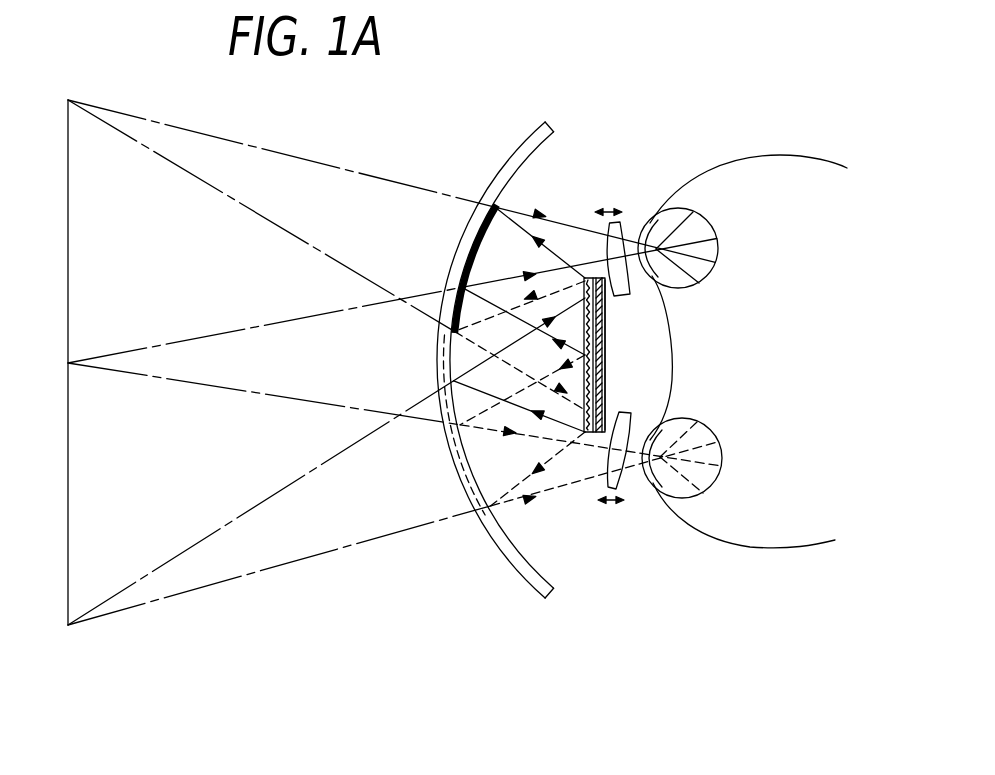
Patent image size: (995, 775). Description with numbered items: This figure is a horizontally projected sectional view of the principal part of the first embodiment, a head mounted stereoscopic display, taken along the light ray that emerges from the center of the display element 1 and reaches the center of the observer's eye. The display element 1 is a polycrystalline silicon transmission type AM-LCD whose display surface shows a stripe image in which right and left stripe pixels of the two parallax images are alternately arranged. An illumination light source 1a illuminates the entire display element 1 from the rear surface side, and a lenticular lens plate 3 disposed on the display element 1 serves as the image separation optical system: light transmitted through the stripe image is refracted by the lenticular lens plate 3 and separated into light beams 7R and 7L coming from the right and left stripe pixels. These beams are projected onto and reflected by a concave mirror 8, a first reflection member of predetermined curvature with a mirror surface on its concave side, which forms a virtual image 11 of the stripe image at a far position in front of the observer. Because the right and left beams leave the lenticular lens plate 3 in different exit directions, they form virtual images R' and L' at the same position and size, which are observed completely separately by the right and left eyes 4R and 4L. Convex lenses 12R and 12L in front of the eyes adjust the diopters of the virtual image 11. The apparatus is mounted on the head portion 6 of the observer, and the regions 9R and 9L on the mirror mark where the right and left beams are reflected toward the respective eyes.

The display element 1 is at (607, 378).
The illumination light source 1a is at (607, 393).
The lenticular lens plate 3 is at (603, 349).
The right eye 4R is at (720, 236).
The left eye 4L is at (722, 453).
The head portion of the observer 6 is at (803, 153).
The right light beam 7R is at (584, 277).
The left light beam 7L is at (586, 444).
The concave mirror 8 is at (521, 570).
The right-eye reflective hologram region 9R is at (472, 244).
The left-eye reflective hologram region 9L is at (462, 477).
The virtual image 11 is at (70, 456).
The convex lens 12R is at (628, 220).
The convex lens 12L is at (622, 482).